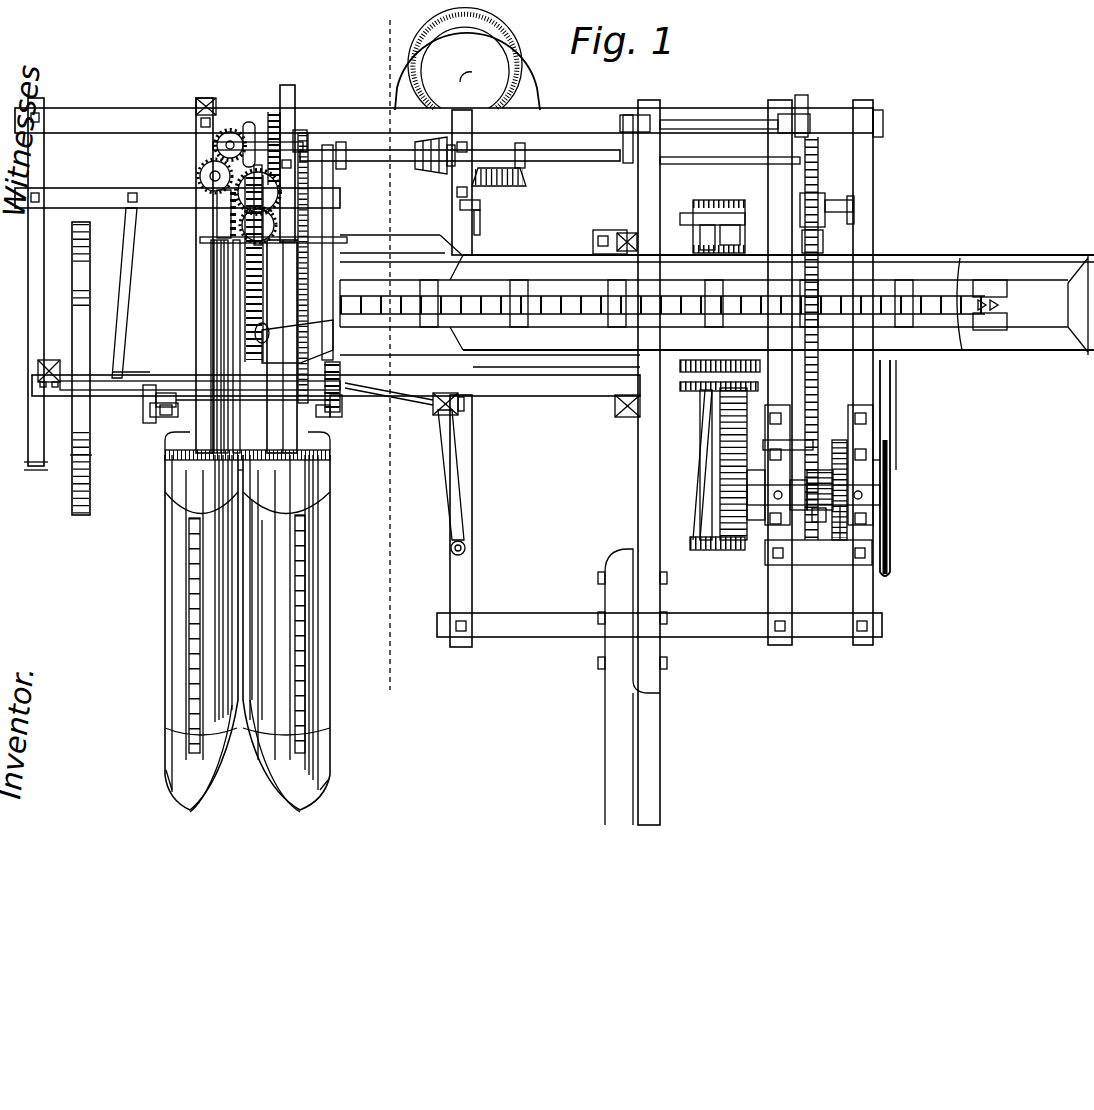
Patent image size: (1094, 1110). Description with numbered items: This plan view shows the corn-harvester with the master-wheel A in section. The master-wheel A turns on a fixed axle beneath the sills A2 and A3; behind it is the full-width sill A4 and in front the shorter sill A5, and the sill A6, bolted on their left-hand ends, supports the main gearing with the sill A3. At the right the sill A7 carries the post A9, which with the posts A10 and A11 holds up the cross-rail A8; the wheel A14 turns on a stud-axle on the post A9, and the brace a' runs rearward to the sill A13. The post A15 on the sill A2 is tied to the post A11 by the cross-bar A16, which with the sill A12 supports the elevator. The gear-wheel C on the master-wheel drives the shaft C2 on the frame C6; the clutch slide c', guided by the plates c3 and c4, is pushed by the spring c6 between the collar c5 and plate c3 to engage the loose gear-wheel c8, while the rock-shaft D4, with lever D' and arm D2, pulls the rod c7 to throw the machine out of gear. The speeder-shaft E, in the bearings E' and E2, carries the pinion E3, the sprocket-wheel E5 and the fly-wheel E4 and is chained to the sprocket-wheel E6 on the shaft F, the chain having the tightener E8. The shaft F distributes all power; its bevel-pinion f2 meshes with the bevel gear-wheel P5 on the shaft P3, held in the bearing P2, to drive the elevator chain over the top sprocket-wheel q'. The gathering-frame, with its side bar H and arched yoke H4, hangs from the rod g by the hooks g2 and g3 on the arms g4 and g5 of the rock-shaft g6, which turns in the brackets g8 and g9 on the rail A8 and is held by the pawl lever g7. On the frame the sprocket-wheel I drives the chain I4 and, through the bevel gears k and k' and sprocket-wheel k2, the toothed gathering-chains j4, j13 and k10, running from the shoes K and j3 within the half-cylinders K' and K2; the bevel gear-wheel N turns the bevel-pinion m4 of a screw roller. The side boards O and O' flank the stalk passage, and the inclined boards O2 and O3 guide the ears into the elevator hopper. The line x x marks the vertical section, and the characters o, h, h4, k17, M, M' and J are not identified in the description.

The master-wheel A is at (127, 258).
The sill A2 is at (340, 297).
The sill A3 is at (780, 372).
The sill A4 is at (449, 122).
The sill A5 is at (659, 625).
The sill A6 is at (575, 366).
The sill A7 is at (32, 446).
The cross-rail A8 is at (525, 386).
The post A9 is at (42, 366).
The post A10 is at (440, 414).
The post A11 is at (624, 412).
The sill A12 is at (473, 450).
The sill A13 is at (177, 198).
The wheel A14 is at (100, 437).
The post A15 is at (632, 226).
The cross-bar A16 is at (600, 236).
The brace a' is at (132, 293).
The link o is at (132, 378).
The section line x is at (386, 351).
The bevel gear-wheel k is at (258, 140).
The bevel gear k' is at (191, 275).
The sprocket-wheel k2 is at (200, 174).
The rack k17 is at (218, 210).
The chain k10 is at (190, 580).
The gathering-shoe K is at (180, 777).
The sheet-iron half-cylinder K' is at (277, 620).
The sheet-iron half-cylinder K2 is at (206, 600).
The side bar H is at (296, 90).
The yoke H4 is at (232, 462).
The rod h is at (500, 362).
The guide h4 is at (246, 489).
The bevel gear-wheel N is at (284, 130).
The sprocket-wheel I is at (309, 155).
The chain I4 is at (306, 185).
The bevel-pinion m4 is at (265, 205).
The chain M is at (263, 268).
The chain guide M' is at (204, 346).
The side board O is at (280, 346).
The side board O' is at (300, 346).
The inclined board O2 is at (294, 341).
The inclined board O3 is at (300, 244).
The shaft F is at (590, 162).
The bevel-pinion f2 is at (418, 160).
The bearing P2 is at (482, 212).
The shaft P3 is at (482, 232).
The bevel gear-wheel P5 is at (508, 186).
The adjustable rod g is at (717, 305).
The hook g2 is at (672, 316).
The hook g3 is at (324, 418).
The arm g4 is at (152, 400).
The arm g5 is at (350, 408).
The rock-shaft g6 is at (253, 387).
The lever g7 is at (350, 333).
The bracket g8 is at (338, 420).
The bracket g9 is at (200, 382).
The sprocket-wheel q' is at (1022, 305).
The lever D' is at (624, 139).
The down-reaching arm D2 is at (812, 112).
The rock-shaft D4 is at (718, 120).
The rod c7 is at (800, 100).
The speeder-shaft E is at (901, 468).
The bearing E' is at (791, 341).
The bearing E2 is at (823, 240).
The pinion E3 is at (816, 400).
The fly-wheel E4 is at (878, 462).
The sprocket-wheel E5 is at (810, 485).
The sprocket-wheel E6 is at (820, 150).
The adjustable tightener E8 is at (821, 205).
The gear-wheel C is at (753, 402).
The shaft C2 is at (757, 470).
The frame C6 is at (891, 500).
The slide c' is at (752, 507).
The plate c3 is at (834, 505).
The plate c4 is at (815, 470).
The collar c5 is at (836, 485).
The spiral spring c6 is at (822, 541).
The gear-wheel c8 is at (840, 541).
The bracket J is at (632, 687).
The gathering-shoe j3 is at (310, 790).
The gathering-chain j4 is at (262, 560).
The gathering-chain j13 is at (302, 582).